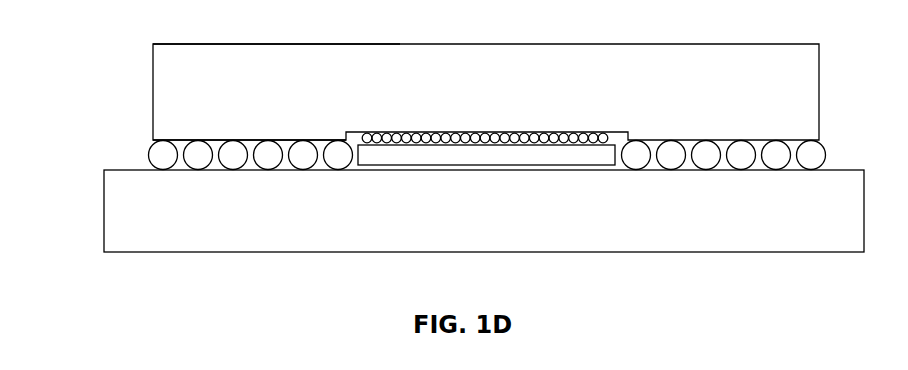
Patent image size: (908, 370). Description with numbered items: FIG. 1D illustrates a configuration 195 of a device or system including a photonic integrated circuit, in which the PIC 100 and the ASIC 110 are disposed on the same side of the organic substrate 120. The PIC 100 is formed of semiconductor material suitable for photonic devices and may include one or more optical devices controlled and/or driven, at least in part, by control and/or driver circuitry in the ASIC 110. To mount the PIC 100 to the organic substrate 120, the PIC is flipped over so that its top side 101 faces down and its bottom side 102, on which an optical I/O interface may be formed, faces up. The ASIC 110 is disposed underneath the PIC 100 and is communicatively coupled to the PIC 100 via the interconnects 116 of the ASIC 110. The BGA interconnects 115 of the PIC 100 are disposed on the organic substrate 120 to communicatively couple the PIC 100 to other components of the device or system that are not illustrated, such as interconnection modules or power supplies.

The photonic integrated circuit (PIC) 100 is at (486, 92).
The top side 101 is at (152, 140).
The bottom side 102 is at (152, 44).
The ASIC 110 is at (486, 155).
The BGA interconnects 115 is at (275, 163).
The interconnects 116 is at (557, 141).
The organic substrate 120 is at (484, 211).
The configuration 195 is at (888, 38).